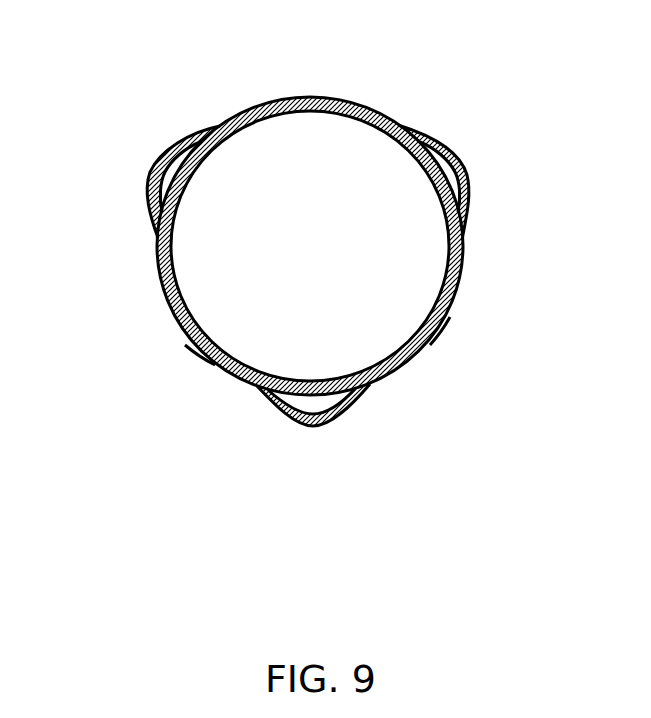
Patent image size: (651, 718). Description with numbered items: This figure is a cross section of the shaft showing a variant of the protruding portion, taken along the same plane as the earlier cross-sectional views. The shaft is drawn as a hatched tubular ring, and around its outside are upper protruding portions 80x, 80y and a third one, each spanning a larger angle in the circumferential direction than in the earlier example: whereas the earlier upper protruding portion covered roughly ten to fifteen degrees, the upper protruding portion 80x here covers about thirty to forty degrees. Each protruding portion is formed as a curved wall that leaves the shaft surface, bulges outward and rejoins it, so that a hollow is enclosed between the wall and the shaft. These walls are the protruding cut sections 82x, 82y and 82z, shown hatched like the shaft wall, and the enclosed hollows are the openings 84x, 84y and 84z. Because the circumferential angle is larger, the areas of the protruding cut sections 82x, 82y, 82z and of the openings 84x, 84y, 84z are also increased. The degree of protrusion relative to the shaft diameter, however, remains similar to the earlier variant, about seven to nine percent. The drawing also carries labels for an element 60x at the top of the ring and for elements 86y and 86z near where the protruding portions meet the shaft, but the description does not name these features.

The tubular ring body 60x is at (284, 97).
The upper protruding portion 80x is at (267, 423).
The upper protruding portion 80y is at (173, 133).
The protruding cut section 82x is at (303, 427).
The protruding cut section 82y is at (150, 162).
The protruding cut section 82z is at (478, 191).
The opening 84x is at (340, 415).
The opening 84y is at (150, 188).
The opening 84z is at (463, 167).
The junction portion 86y is at (450, 317).
The junction portion 86z is at (455, 148).